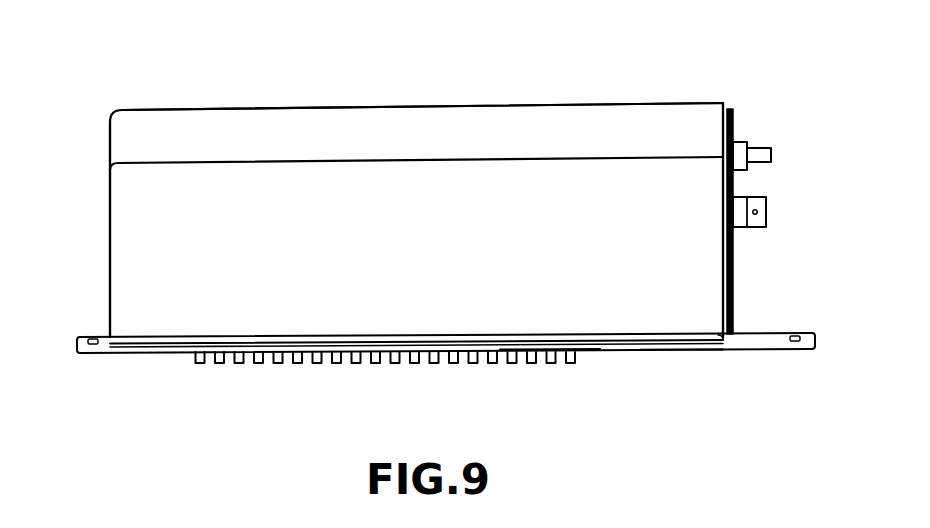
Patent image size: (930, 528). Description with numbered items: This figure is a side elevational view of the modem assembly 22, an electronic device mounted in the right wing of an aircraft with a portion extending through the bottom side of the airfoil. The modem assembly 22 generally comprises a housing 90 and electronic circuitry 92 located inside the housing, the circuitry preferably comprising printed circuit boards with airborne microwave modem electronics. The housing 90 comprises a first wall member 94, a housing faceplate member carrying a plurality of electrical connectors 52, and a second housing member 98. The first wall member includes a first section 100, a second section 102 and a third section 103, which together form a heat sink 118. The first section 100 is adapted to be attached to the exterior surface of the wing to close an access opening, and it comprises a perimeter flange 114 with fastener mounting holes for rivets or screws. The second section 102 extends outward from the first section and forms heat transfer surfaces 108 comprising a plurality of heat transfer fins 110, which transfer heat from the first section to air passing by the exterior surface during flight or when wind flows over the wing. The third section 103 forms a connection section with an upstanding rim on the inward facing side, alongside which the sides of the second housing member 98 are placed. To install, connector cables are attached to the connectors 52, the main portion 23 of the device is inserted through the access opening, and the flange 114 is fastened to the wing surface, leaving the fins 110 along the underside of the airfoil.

The modem assembly 22 is at (133, 72).
The main portion 23 is at (130, 242).
The electrical connectors 52 is at (772, 153).
The housing 90 is at (606, 120).
The electronic circuitry 92 is at (344, 210).
The first wall member 94 is at (135, 355).
The second housing member 98 is at (703, 118).
The first section 100 is at (815, 342).
The second section 102 is at (450, 363).
The third section 103 is at (677, 323).
The heat transfer surfaces 108 is at (258, 362).
The heat transfer fins 110 is at (412, 366).
The perimeter flange 114 is at (77, 340).
The heat sink 118 is at (538, 315).